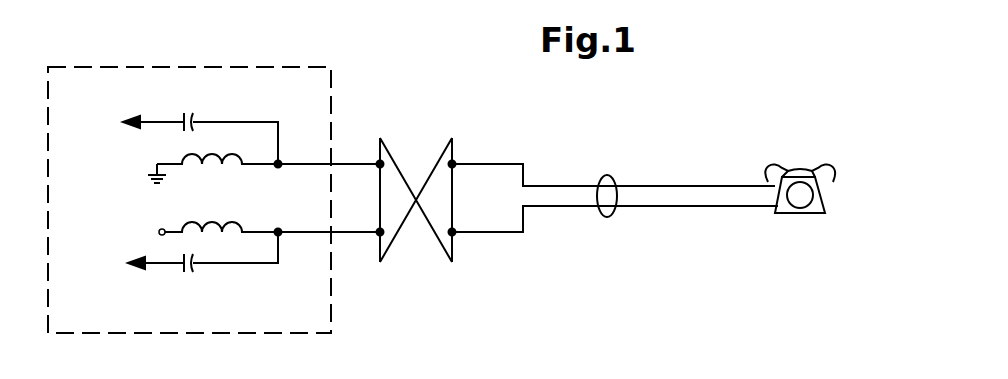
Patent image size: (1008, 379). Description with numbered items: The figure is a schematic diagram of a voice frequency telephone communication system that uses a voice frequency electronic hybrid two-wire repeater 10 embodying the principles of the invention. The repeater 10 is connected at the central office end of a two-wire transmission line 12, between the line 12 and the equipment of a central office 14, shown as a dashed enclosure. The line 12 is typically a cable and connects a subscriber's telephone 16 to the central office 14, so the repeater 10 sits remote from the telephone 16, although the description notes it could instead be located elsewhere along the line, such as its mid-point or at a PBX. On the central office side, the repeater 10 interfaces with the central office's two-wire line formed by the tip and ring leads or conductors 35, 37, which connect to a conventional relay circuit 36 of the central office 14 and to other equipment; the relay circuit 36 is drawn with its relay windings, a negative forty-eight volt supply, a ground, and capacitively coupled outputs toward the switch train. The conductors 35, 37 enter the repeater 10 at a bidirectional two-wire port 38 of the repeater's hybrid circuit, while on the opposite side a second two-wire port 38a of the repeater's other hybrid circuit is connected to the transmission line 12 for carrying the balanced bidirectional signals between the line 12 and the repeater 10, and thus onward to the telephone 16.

The repeater 10 is at (425, 214).
The two-wire transmission line 12 is at (628, 206).
The central office 14 is at (312, 67).
The subscriber's telephone 16 is at (838, 173).
The tip lead 35 is at (318, 163).
The relay circuit 36 is at (136, 192).
The ring lead 37 is at (318, 234).
The two-wire port 38 is at (368, 208).
The two-wire port 38a is at (478, 200).